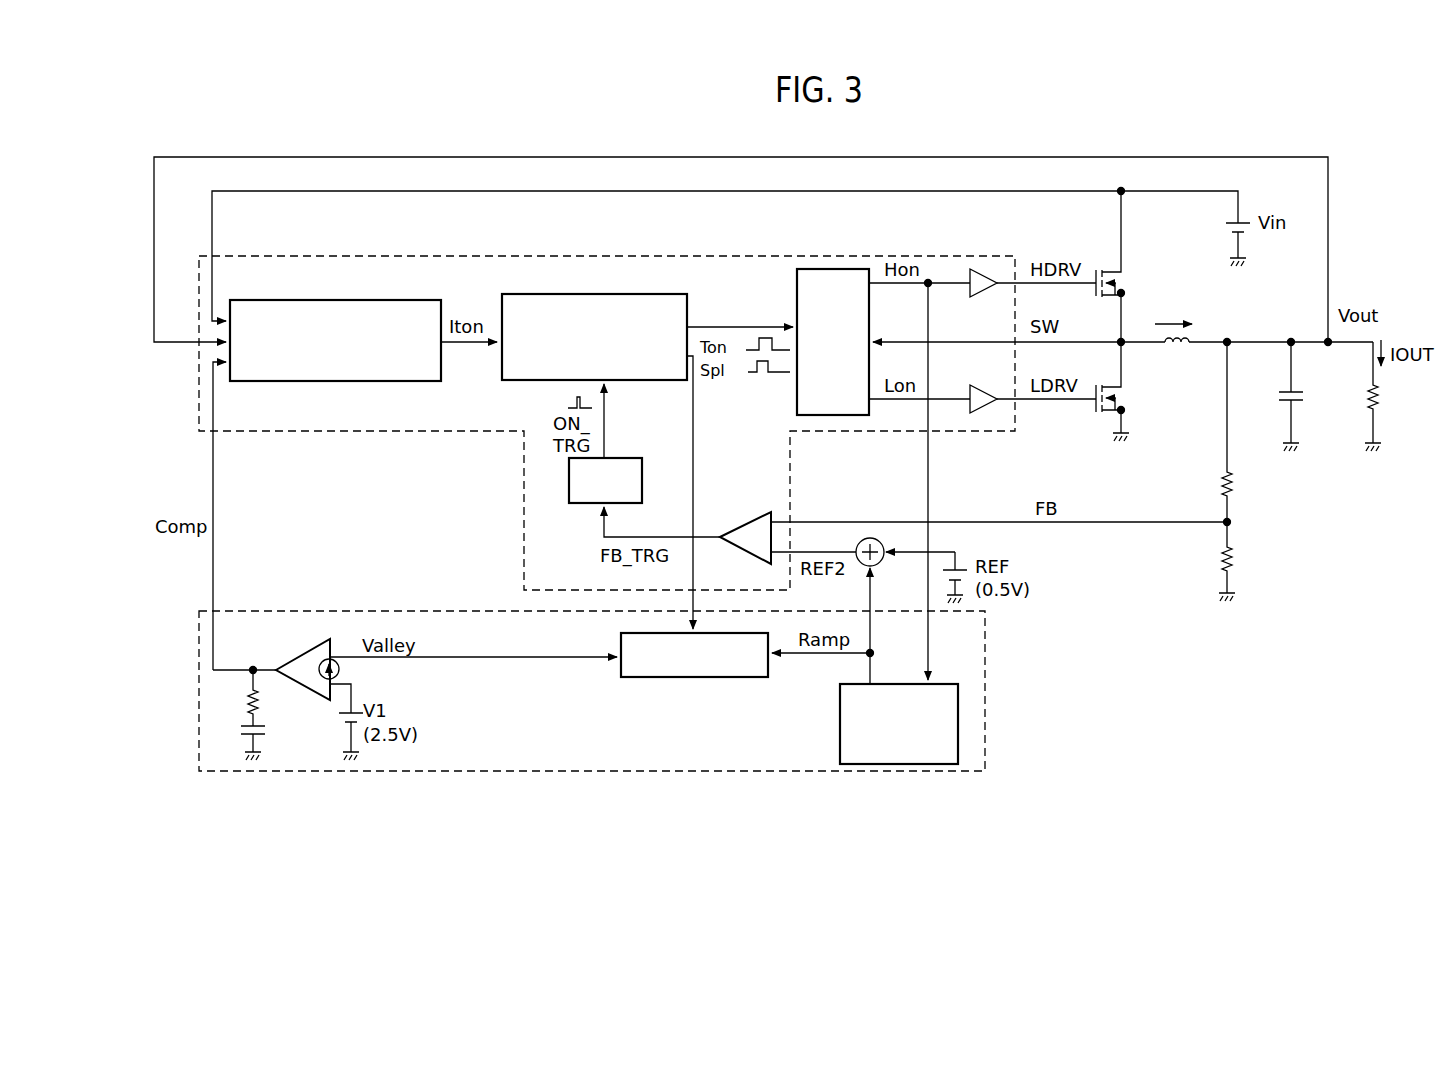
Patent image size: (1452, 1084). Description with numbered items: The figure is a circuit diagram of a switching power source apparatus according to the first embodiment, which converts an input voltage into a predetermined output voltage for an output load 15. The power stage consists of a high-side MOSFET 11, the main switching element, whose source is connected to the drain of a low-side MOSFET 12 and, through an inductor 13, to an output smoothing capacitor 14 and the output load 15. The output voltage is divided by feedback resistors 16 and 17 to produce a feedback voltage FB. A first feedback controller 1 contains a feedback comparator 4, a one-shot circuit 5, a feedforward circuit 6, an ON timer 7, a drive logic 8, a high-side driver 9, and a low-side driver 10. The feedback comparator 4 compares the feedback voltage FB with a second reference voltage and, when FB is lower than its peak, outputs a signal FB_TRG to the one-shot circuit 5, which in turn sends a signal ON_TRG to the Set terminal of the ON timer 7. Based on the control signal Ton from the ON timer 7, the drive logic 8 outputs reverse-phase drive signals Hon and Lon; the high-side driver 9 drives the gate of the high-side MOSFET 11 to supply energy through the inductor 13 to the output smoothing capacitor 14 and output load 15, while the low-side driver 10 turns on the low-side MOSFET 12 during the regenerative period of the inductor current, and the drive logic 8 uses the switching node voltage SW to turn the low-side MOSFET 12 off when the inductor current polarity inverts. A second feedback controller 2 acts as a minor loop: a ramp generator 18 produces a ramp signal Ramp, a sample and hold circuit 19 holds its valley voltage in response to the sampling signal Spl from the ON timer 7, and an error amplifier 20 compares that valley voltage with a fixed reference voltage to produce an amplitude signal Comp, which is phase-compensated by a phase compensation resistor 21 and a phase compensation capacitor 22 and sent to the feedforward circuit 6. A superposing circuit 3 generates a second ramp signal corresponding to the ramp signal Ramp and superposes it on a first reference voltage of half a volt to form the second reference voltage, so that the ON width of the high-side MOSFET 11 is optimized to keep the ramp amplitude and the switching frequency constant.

The first feedback controller 1 is at (420, 256).
The second feedback controller 2 is at (384, 611).
The superposing circuit 3 is at (870, 538).
The feedback comparator 4 is at (748, 522).
The one-shot circuit 5 is at (642, 478).
The feedforward circuit 6 is at (335, 300).
The ON timer 7 is at (632, 382).
The drive logic 8 is at (797, 405).
The high-side driver 9 is at (984, 297).
The low-side driver 10 is at (982, 384).
The high-side MOSFET 11 is at (1124, 273).
The low-side MOSFET 12 is at (1123, 400).
The inductor 13 is at (1170, 356).
The output smoothing capacitor 14 is at (1282, 385).
The output load 15 is at (1380, 412).
The feedback resistor 16 is at (1218, 480).
The feedback resistor 17 is at (1220, 559).
The ramp generator 18 is at (840, 730).
The sample and hold circuit 19 is at (692, 677).
The error amplifier 20 is at (292, 660).
The phase compensation resistor 21 is at (259, 700).
The phase compensation capacitor 22 is at (260, 740).